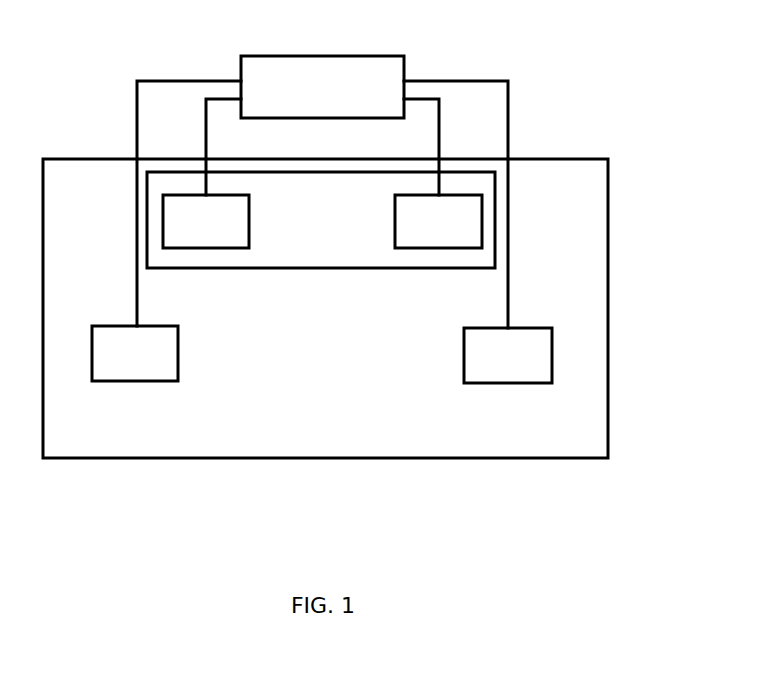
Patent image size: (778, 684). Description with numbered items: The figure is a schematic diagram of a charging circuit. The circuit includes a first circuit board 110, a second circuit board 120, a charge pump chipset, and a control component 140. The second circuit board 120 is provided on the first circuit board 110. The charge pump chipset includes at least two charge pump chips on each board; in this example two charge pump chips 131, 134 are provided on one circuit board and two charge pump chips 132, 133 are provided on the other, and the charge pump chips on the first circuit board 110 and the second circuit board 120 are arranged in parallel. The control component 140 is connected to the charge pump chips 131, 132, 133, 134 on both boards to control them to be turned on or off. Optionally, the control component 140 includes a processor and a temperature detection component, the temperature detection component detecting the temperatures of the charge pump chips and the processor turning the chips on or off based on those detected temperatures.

The first circuit board 110 is at (608, 232).
The second circuit board 120 is at (290, 269).
The charge pump chip 131 is at (249, 207).
The charge pump chip 132 is at (178, 356).
The charge pump chip 133 is at (464, 355).
The charge pump chip 134 is at (395, 240).
The control component 140 is at (400, 55).